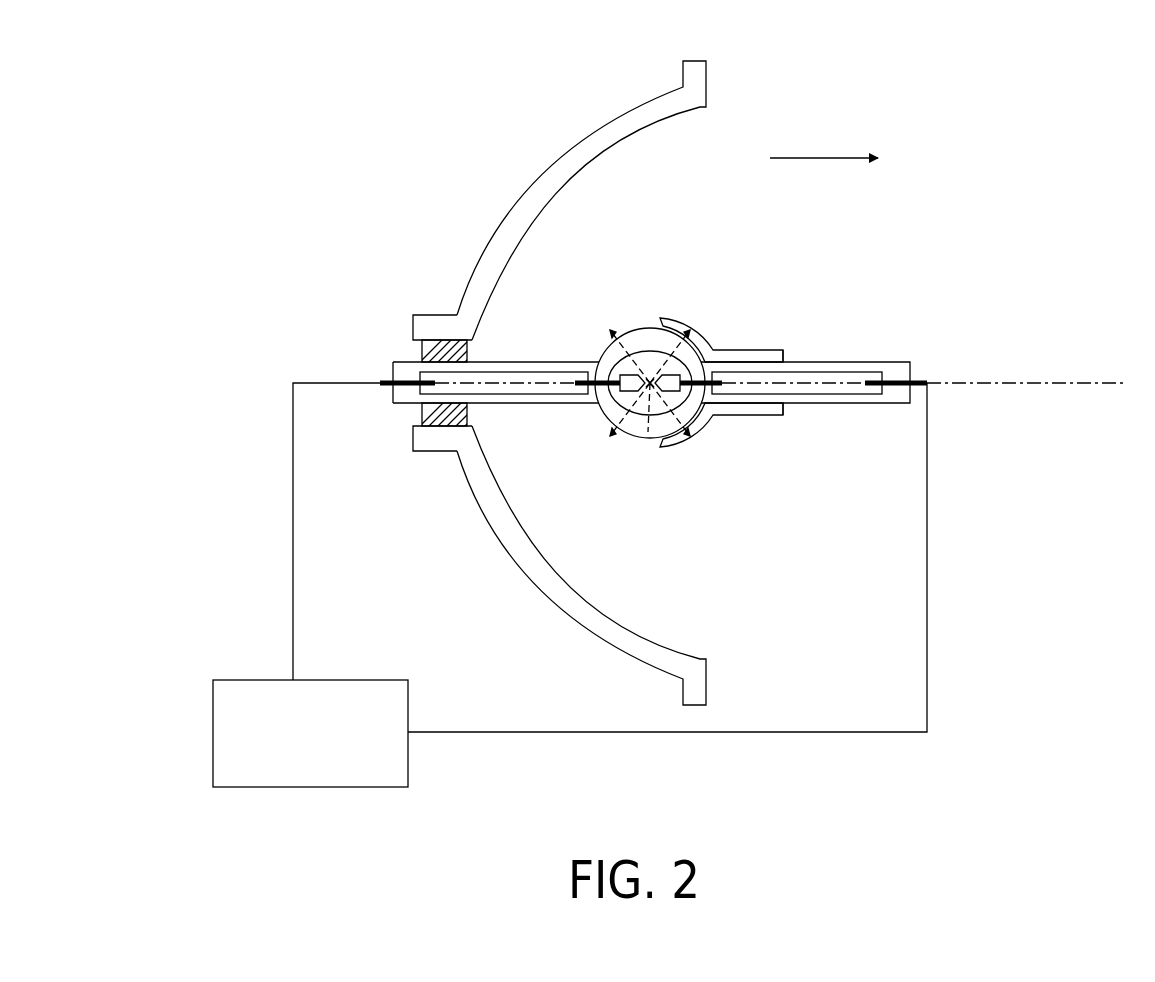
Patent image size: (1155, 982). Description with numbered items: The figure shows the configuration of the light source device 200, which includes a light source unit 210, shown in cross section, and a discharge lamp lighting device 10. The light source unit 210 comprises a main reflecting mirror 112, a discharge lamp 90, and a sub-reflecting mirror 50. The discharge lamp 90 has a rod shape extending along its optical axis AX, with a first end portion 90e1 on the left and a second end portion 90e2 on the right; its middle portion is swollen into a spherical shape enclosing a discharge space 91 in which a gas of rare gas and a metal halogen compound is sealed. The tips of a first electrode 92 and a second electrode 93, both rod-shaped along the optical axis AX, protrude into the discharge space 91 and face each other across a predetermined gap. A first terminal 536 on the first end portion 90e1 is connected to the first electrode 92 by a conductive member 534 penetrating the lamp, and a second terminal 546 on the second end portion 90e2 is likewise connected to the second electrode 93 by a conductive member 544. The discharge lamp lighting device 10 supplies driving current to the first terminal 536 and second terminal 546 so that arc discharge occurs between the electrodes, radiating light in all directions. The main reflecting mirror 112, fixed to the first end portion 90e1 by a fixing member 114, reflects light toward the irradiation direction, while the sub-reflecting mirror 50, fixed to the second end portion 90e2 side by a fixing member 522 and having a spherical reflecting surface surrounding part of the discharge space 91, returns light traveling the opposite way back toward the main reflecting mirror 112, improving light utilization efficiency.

The light source device 200 is at (1050, 97).
The light source unit 210 is at (440, 157).
The main reflecting mirror 112 is at (551, 165).
The fixing member 114 is at (418, 340).
The discharge lamp 90 is at (632, 326).
The discharge space 91 is at (648, 432).
The first electrode 92 is at (594, 411).
The second electrode 93 is at (703, 412).
The first end portion 90e1 is at (392, 362).
The second end portion 90e2 is at (888, 362).
The sub-reflecting mirror 50 is at (681, 317).
The fixing member 522 is at (788, 361).
The conductive member 534 is at (520, 392).
The conductive member 544 is at (813, 392).
The first terminal 536 is at (384, 390).
The second terminal 546 is at (918, 388).
The discharge lamp lighting device 10 is at (343, 678).
The optical axis AX is at (1052, 380).